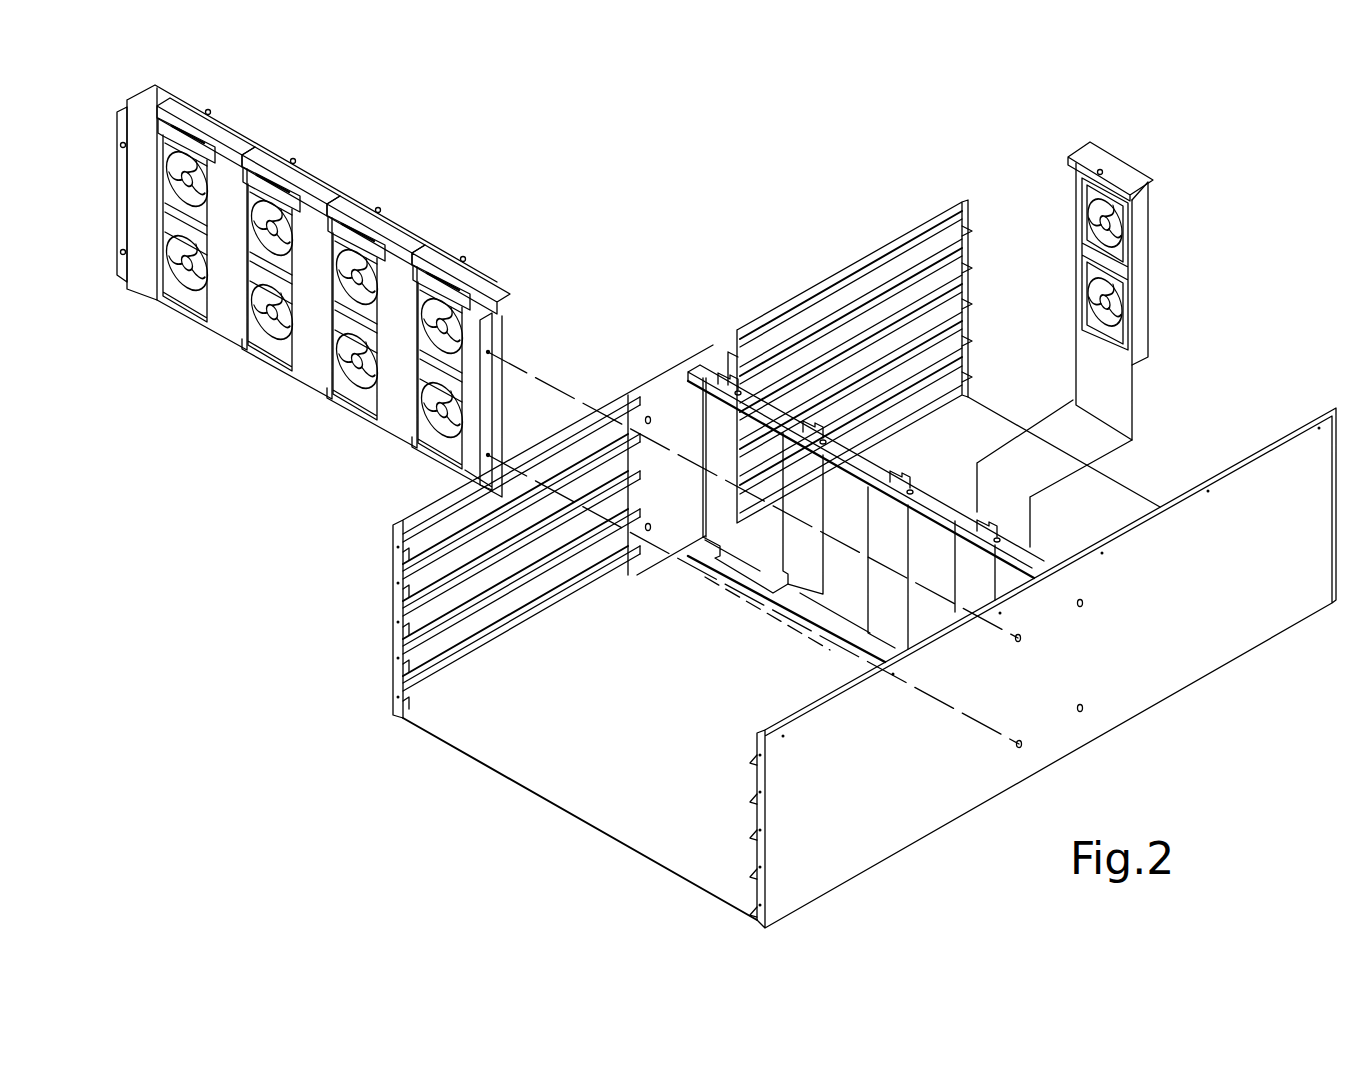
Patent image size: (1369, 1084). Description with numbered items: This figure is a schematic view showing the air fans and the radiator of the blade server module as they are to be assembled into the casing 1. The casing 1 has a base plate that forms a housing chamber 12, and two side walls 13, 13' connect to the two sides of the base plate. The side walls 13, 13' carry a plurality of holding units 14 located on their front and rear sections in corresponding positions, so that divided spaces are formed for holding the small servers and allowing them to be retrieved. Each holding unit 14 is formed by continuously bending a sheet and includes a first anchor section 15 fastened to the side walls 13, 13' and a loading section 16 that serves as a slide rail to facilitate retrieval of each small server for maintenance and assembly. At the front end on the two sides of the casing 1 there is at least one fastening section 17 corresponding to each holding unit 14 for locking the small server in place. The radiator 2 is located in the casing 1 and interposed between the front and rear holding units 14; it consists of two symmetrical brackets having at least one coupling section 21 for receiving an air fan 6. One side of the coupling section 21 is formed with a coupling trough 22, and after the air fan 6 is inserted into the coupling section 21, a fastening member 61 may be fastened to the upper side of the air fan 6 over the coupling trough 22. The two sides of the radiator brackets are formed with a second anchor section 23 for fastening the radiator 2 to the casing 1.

The casing 1 is at (1213, 350).
The radiator 2 is at (715, 360).
The air fan 6 is at (1127, 164).
The fastening member 61 is at (1100, 170).
The housing chamber 12 is at (1117, 487).
The side wall 13 is at (706, 531).
The side wall 13' is at (1043, 668).
The holding unit 14 is at (972, 224).
The first anchor section 15 is at (738, 353).
The loading section 16 is at (972, 241).
The fastening section 17 is at (393, 642).
The coupling section 21 is at (918, 482).
The coupling trough 22 is at (914, 490).
The second anchor section 23 is at (495, 337).